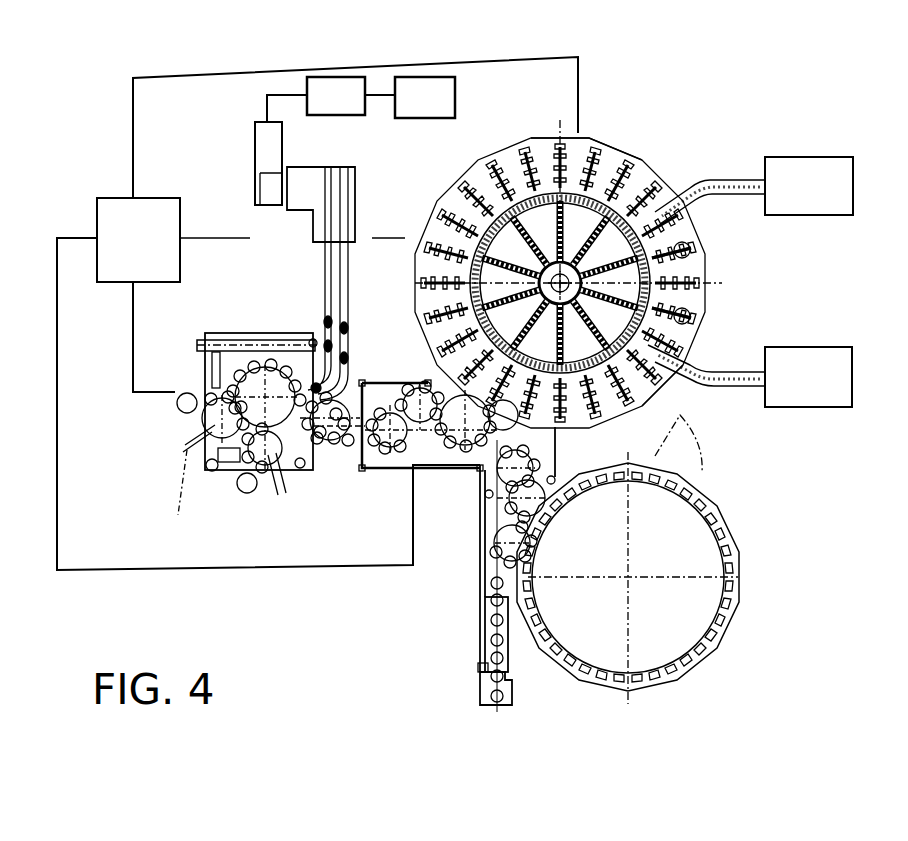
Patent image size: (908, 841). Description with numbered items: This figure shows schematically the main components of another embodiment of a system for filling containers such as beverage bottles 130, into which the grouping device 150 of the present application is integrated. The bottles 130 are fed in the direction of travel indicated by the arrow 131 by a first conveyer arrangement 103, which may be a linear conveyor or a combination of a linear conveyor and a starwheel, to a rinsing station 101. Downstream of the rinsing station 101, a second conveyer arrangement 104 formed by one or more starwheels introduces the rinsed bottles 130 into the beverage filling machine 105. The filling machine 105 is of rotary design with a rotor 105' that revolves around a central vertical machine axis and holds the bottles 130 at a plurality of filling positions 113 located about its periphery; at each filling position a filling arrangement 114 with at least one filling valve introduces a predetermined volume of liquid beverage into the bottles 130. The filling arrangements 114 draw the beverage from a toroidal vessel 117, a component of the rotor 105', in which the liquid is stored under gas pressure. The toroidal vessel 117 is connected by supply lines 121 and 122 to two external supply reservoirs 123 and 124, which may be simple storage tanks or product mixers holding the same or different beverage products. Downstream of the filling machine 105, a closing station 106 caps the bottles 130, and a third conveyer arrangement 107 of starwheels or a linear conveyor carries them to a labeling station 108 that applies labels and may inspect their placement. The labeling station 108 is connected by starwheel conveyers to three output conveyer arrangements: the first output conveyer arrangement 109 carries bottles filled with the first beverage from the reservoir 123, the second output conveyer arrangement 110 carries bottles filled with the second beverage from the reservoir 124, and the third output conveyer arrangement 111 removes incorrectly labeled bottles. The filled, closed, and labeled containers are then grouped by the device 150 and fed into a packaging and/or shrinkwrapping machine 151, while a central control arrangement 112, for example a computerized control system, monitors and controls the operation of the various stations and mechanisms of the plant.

The rinsing station 101 is at (754, 489).
The first conveyer arrangement 103 is at (507, 660).
The second conveyer arrangement 104 is at (486, 522).
The beverage filling machine 105 is at (608, 283).
The rotor 105' is at (612, 134).
The closing station 106 is at (410, 380).
The third conveyer arrangement 107 is at (366, 480).
The labeling station 108 is at (232, 500).
The first output conveyer arrangement 109 is at (348, 320).
The second output conveyer arrangement 110 is at (324, 268).
The third output conveyer arrangement 111 is at (232, 335).
The central control arrangement 112 is at (156, 250).
The filling positions 113 is at (694, 234).
The filling arrangement 114 is at (690, 306).
The toroidal vessel 117 is at (645, 406).
The supply line 121 is at (726, 178).
The supply line 122 is at (732, 365).
The external supply reservoir 123 is at (853, 186).
The external supply reservoir 124 is at (853, 384).
The bottles 130 is at (496, 658).
The arrow 131 is at (467, 640).
The device 150 is at (354, 106).
The packaging machine 151 is at (443, 108).